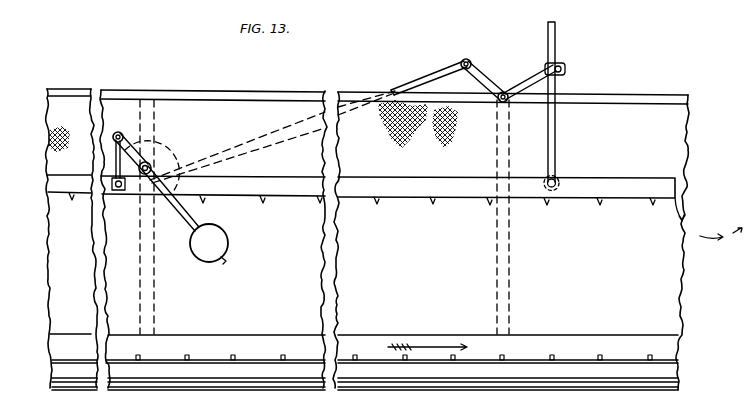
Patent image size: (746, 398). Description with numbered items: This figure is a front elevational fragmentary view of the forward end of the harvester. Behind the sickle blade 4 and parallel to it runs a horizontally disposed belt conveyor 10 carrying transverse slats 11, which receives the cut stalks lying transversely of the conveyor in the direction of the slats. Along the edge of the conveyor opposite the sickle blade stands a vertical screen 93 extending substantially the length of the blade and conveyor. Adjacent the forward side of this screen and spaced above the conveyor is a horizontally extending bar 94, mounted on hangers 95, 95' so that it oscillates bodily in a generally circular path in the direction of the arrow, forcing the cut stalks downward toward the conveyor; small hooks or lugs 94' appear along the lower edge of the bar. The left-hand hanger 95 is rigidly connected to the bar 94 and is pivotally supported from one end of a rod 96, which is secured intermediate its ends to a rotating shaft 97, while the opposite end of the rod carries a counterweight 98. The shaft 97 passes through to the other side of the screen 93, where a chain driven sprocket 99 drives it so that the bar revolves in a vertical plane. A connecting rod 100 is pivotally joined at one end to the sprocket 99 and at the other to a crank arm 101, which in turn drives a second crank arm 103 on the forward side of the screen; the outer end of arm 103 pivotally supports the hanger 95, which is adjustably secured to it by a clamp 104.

The sickle blade 4 is at (673, 382).
The belt conveyor 10 is at (662, 360).
The transverse slats 11 is at (598, 357).
The vertical screen 93 is at (237, 112).
The horizontally extending bar 94 is at (365, 195).
The band hooks 94' is at (362, 213).
The left-hand hanger 95 is at (89, 165).
The hanger 95' is at (566, 106).
The rod 96 is at (143, 139).
The rotating shaft 97 is at (155, 163).
The counterweight 98 is at (230, 242).
The chain driven sprocket 99 is at (167, 148).
The connecting rod 100 is at (406, 87).
The crank arm 101 is at (487, 79).
The second crank arm 103 is at (526, 80).
The clamp 104 is at (562, 60).